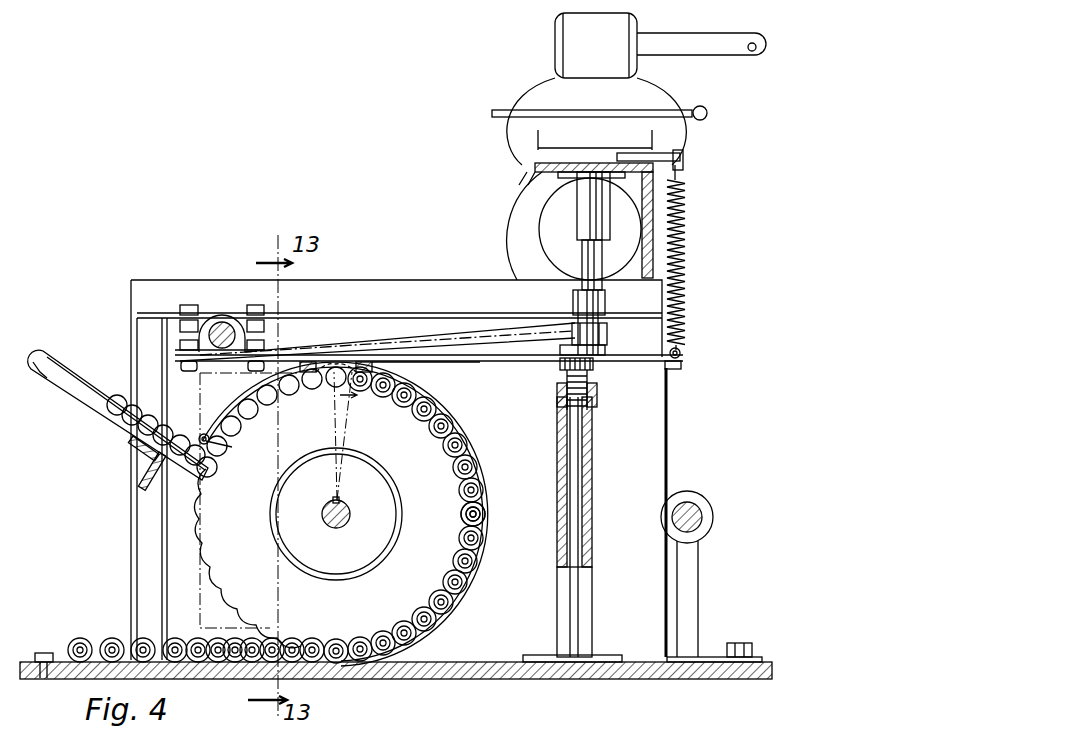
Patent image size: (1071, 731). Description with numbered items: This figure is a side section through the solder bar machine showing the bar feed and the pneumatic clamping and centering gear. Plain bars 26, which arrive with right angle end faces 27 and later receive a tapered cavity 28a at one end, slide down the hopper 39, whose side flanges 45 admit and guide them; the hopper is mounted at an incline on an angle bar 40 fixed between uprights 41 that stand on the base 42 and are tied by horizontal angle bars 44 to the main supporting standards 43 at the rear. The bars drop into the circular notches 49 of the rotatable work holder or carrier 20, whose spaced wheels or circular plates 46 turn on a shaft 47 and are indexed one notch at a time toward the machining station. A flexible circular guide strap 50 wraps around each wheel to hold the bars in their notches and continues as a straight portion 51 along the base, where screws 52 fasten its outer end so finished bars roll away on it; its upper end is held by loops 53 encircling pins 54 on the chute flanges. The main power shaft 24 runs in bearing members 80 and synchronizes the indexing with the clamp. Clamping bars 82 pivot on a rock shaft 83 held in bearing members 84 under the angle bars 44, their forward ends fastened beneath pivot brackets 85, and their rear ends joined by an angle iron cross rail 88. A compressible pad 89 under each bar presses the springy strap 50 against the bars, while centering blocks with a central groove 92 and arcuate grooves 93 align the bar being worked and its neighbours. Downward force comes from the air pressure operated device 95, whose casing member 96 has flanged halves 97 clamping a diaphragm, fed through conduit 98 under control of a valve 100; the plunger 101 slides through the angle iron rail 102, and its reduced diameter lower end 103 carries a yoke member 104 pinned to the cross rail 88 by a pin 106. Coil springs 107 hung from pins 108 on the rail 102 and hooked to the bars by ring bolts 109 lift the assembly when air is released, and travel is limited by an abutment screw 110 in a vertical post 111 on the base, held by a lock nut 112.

The rotatable work holder or carrier 20 is at (330, 514).
The main power shaft 24 is at (692, 512).
The bar 26 is at (150, 425).
The right angle end faces 27 is at (213, 470).
The female portion or cavity 28a is at (462, 470).
The hopper 39 is at (54, 385).
The angle bar 40 is at (150, 463).
The uprights 41 is at (140, 551).
The base 42 is at (452, 680).
The main supporting standards 43 is at (667, 425).
The horizontal angle bars 44 is at (422, 290).
The side flanges 45 is at (76, 374).
The wheels or circular plates 46 is at (405, 583).
The shaft 47 is at (350, 512).
The circular notches 49 is at (245, 570).
The circular guide strap 50 is at (430, 415).
The straight portion of guide strap 51 is at (220, 668).
The screws 52 is at (43, 653).
The loops 53 is at (205, 434).
The pins 54 is at (232, 447).
The bearing members 80 is at (699, 571).
The bars 82 is at (398, 330).
The rock shaft 83 is at (232, 323).
The bearing members 84 is at (184, 325).
The pivot brackets 85 is at (216, 326).
The angle iron cross rail 88 is at (606, 351).
The pad 89 is at (385, 366).
The central groove 92 is at (338, 360).
The arcuate grooves 93 is at (315, 386).
The air pressure operated device 95 is at (533, 92).
The casing member 96 is at (652, 130).
The flanges 97 is at (716, 102).
The conduit 98 is at (696, 45).
The valve 100 is at (558, 30).
The plunger 101 is at (578, 205).
The angle iron rail 102 is at (653, 220).
The reduced diameter lower end 103 is at (582, 252).
The yoke member 104 is at (577, 300).
The pin 106 is at (572, 337).
The coil springs 107 is at (687, 263).
The pins 108 is at (680, 155).
The ring bolts 109 is at (681, 352).
The abutment screw 110 is at (560, 366).
The vertical post 111 is at (590, 466).
The lock nut 112 is at (597, 395).